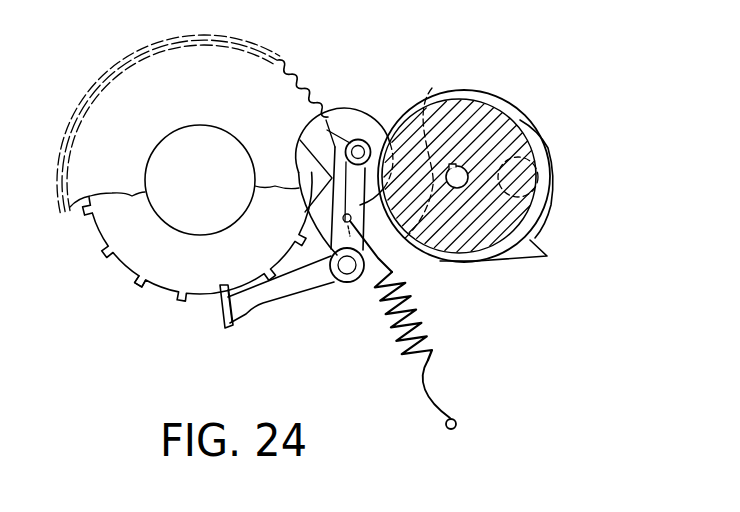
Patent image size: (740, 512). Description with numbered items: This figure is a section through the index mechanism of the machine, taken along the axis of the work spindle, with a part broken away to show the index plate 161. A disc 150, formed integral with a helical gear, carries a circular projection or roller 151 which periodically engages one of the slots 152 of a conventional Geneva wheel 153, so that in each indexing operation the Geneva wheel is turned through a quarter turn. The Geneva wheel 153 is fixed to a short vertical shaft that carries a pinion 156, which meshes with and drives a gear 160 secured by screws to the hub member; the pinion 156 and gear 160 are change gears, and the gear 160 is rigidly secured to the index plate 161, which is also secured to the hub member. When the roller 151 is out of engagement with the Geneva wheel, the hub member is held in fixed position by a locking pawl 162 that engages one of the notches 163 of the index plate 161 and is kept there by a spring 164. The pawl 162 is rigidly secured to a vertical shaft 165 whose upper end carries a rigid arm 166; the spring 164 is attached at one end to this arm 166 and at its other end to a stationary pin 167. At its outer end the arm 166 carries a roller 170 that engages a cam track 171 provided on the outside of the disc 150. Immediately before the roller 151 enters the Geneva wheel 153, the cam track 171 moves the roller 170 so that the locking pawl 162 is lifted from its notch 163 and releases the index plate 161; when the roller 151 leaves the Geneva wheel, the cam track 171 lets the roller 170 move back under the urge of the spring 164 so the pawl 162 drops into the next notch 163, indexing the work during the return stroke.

The disc 150 is at (484, 96).
The circular projection or roller 151 is at (546, 158).
The slot 152 is at (327, 130).
The Geneva wheel 153 is at (349, 116).
The pinion 156 is at (413, 130).
The gear 160 is at (290, 82).
The index plate 161 is at (110, 233).
The locking pawl 162 is at (238, 303).
The notch 163 is at (141, 273).
The spring 164 is at (410, 306).
The vertical shaft 165 is at (336, 283).
The arm 166 is at (343, 218).
The stationary pin 167 is at (456, 418).
The roller 170 is at (352, 152).
The cam track 171 is at (508, 253).